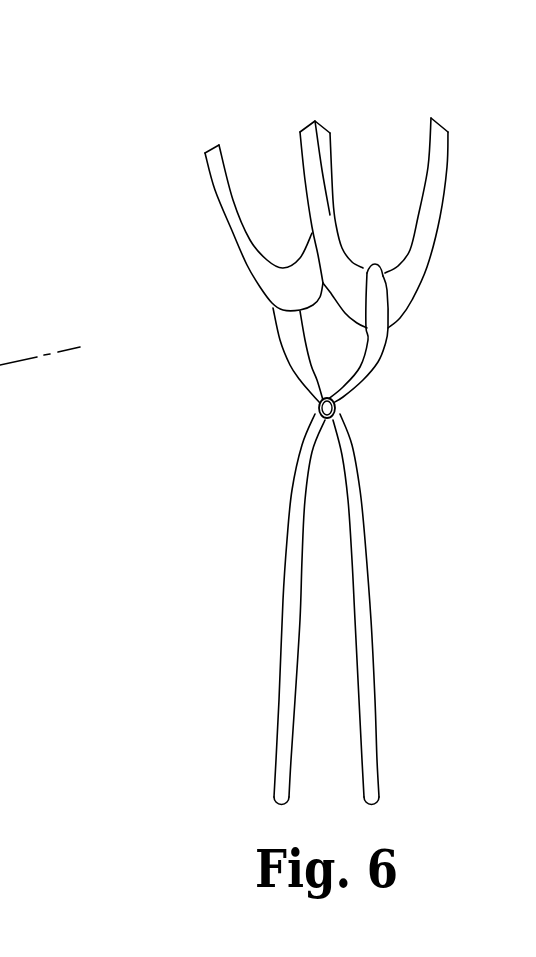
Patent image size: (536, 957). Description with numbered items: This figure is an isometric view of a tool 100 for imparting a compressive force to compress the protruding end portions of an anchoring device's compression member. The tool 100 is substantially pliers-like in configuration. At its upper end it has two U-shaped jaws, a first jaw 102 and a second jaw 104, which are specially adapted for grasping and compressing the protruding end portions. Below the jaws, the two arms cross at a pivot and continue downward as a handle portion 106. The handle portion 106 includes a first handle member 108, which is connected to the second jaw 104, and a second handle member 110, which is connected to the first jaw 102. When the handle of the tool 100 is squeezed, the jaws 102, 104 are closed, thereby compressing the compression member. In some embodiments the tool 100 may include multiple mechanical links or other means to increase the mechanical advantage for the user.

The tool 100 is at (255, 85).
The first jaw 102 is at (236, 242).
The second jaw 104 is at (437, 218).
The handle portion 106 is at (422, 571).
The first handle member 108 is at (277, 763).
The second handle member 110 is at (380, 757).